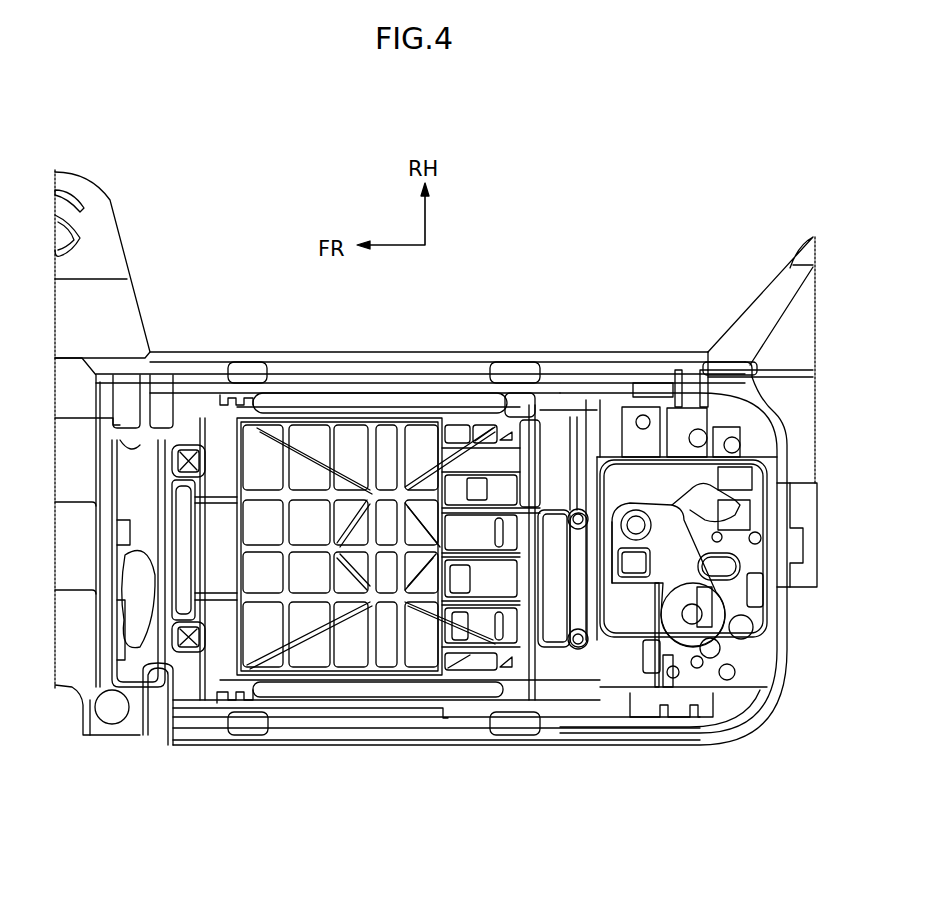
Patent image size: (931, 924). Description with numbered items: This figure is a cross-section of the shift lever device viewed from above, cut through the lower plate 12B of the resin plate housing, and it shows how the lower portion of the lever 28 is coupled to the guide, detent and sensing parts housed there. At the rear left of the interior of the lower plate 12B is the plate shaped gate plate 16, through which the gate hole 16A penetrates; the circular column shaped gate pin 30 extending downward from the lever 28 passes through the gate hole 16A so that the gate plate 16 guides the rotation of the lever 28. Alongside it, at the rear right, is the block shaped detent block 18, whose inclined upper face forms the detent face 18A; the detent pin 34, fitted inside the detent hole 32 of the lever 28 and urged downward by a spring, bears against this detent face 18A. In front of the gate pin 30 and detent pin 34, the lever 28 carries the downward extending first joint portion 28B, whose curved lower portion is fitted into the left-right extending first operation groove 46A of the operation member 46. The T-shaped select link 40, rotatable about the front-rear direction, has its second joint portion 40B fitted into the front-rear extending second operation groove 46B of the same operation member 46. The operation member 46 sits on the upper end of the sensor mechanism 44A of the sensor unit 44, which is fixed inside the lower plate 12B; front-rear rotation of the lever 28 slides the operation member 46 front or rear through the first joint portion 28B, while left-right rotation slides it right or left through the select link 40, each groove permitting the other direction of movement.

The lower plate 12B is at (290, 358).
The sensor mechanism 44A is at (322, 410).
The sensor unit 44 is at (385, 411).
The operation member 46 is at (465, 505).
The first joint portion 28B is at (566, 508).
The detent hole 32 is at (633, 520).
The detent block 18 is at (648, 472).
The detent face 18A is at (680, 472).
The detent pin 34 is at (710, 468).
The select link 40 is at (450, 580).
The second joint portion 40B is at (478, 590).
The second operation groove 46B is at (520, 587).
The first operation groove 46A is at (576, 600).
The lever 28 is at (603, 632).
The gate hole 16A is at (640, 613).
The gate pin 30 is at (690, 624).
The gate plate 16 is at (723, 593).